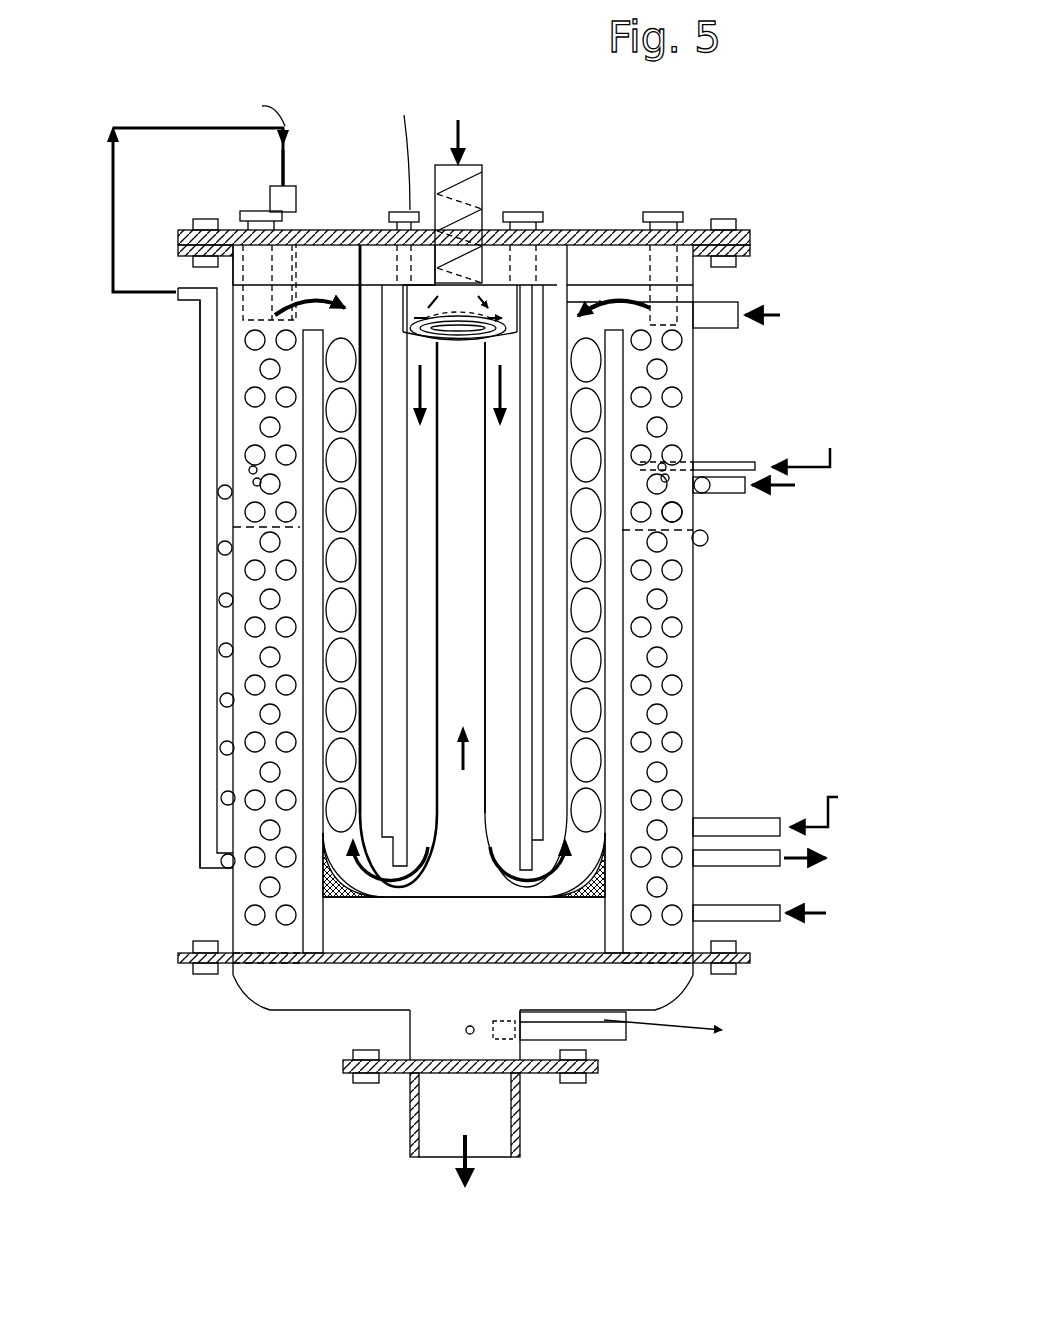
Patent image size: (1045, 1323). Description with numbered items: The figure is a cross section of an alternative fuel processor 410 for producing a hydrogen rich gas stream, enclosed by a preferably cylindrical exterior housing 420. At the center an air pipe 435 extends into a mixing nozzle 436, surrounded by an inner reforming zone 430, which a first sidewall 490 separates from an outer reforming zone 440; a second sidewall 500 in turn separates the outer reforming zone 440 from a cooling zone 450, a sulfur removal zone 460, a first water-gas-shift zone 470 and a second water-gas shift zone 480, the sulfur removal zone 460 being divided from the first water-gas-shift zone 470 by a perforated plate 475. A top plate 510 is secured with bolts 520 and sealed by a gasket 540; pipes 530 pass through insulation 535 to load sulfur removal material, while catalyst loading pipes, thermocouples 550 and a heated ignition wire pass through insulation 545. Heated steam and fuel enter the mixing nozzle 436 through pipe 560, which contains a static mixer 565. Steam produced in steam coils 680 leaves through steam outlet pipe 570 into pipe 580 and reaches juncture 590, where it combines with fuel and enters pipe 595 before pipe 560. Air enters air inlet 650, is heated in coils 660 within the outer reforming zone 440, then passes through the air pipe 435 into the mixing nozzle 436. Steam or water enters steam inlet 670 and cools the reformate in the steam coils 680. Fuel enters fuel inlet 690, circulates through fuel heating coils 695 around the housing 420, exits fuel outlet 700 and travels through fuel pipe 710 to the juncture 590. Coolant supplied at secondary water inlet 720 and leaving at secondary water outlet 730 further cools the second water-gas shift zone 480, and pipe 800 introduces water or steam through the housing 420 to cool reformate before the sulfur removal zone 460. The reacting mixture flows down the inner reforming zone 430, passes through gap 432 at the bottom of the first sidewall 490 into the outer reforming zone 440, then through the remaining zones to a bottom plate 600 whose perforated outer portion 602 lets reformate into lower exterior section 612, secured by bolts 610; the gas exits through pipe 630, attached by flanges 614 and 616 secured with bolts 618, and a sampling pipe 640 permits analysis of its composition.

The fuel processor 410 is at (190, 606).
The exterior housing 420 is at (702, 586).
The inner reforming zone 430 is at (510, 606).
The gap 432 is at (545, 865).
The air pipe 435 is at (480, 682).
The mixing nozzle 436 is at (518, 302).
The outer reforming zone 440 is at (601, 716).
The cooling zone 450 is at (680, 380).
The sulfur removal zone 460 is at (682, 516).
The first water-gas-shift zone 470 is at (262, 632).
The perforated plate 475 is at (233, 527).
The second water-gas shift zone 480 is at (246, 888).
The first sidewall 490 is at (366, 740).
The second sidewall 500 is at (300, 616).
The top plate 510 is at (750, 236).
The bolts 520 is at (722, 222).
The pipes 530 is at (664, 212).
The insulation 535 is at (329, 270).
The gasket 540 is at (495, 230).
The insulation 545 is at (485, 240).
The thermocouples 550 is at (400, 212).
The pipe 560 is at (476, 178).
The static mixer 565 is at (505, 315).
The steam outlet pipe 570 is at (270, 200).
The pipe 580 is at (282, 176).
The juncture 590 is at (318, 149).
The pipe 595 is at (457, 118).
The bottom plate 600 is at (598, 966).
The perforated outer portion 602 is at (282, 948).
The bolts 610 is at (744, 955).
The lower exterior section 612 is at (262, 1012).
The flange 614 is at (597, 1063).
The flange 616 is at (598, 1076).
The bolts 618 is at (362, 1084).
The pipe 630 is at (522, 1122).
The sampling pipe 640 is at (659, 1036).
The air inlet 650 is at (561, 316).
The coils 660 is at (330, 356).
The steam inlet 670 is at (791, 807).
The steam coils 680 is at (492, 645).
The fuel inlet 690 is at (771, 484).
The fuel heating coils 695 is at (708, 538).
The fuel outlet 700 is at (182, 298).
The fuel pipe 710 is at (113, 218).
The secondary water inlet 720 is at (786, 912).
The secondary water outlet 730 is at (786, 857).
The pipe 800 is at (751, 444).